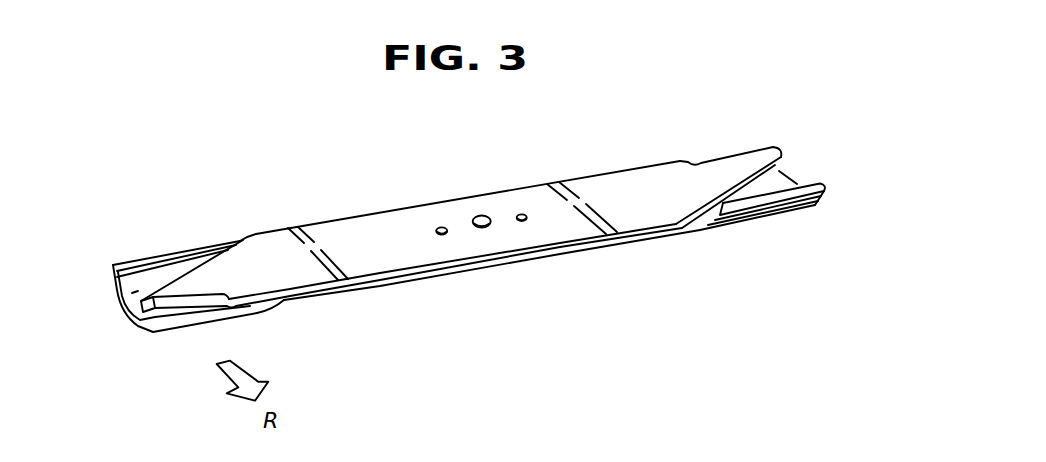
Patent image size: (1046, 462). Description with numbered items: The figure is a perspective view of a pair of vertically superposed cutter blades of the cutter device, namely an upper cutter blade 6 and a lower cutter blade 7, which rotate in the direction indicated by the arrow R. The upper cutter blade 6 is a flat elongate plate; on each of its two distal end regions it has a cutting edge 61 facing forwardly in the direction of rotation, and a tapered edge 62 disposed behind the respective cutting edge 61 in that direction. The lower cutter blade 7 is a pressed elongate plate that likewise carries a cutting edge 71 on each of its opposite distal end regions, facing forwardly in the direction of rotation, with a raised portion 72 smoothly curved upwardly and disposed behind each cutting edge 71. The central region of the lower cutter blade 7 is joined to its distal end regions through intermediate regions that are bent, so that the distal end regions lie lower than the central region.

The upper cutter blade 6 is at (415, 222).
The lower cutter blade 7 is at (575, 253).
The cutting edges 61 is at (185, 310).
The tapered edges 62 is at (195, 269).
The cutting edges 71 is at (162, 333).
The raised portions 72 is at (130, 270).